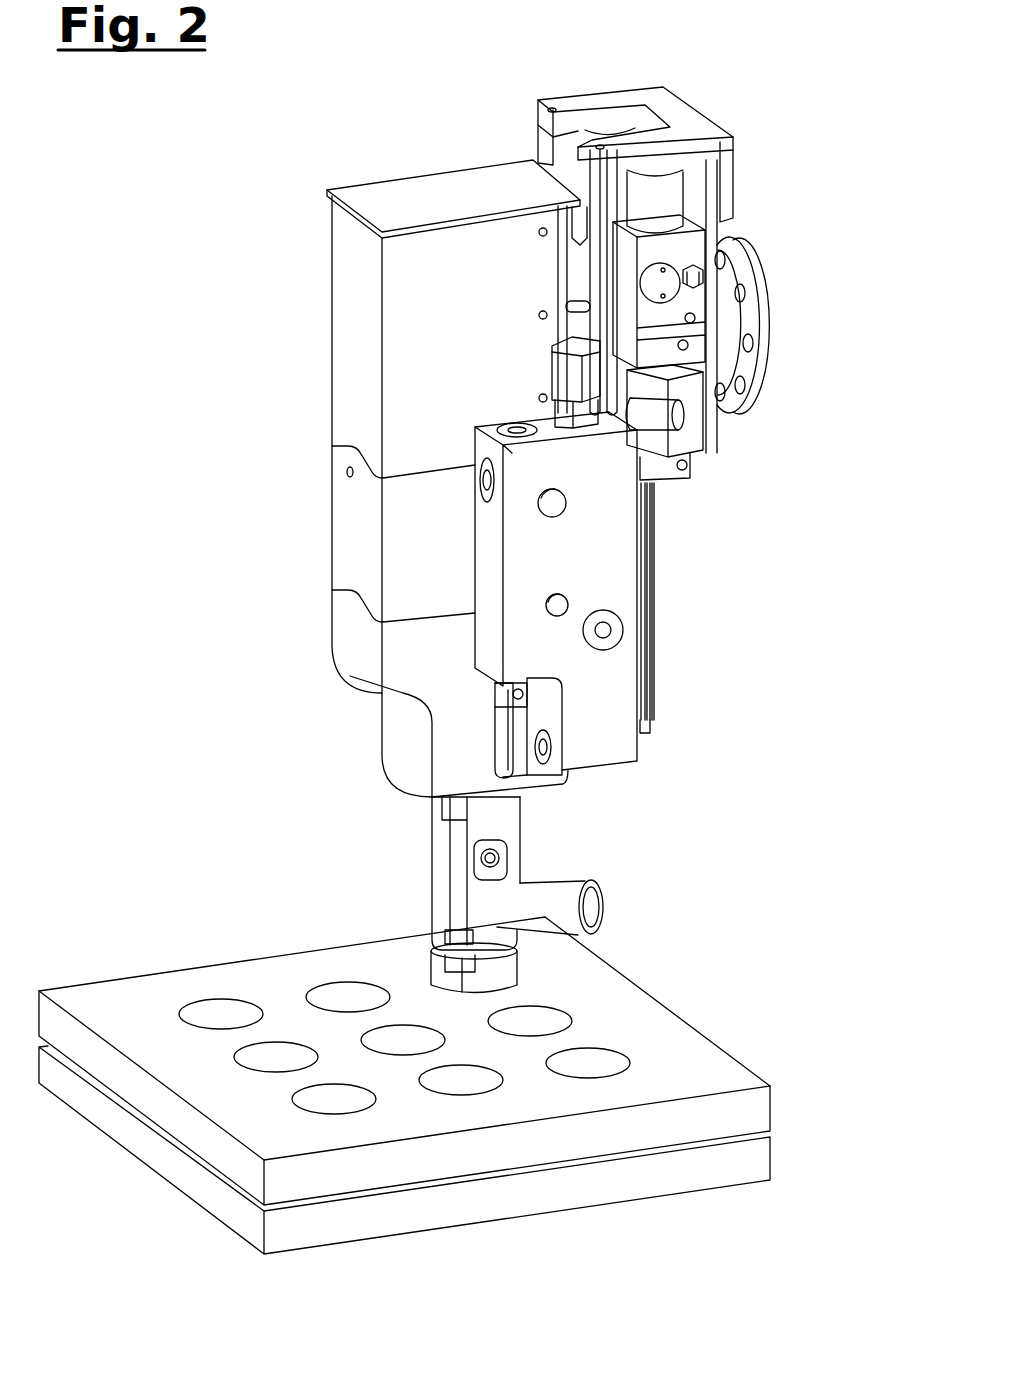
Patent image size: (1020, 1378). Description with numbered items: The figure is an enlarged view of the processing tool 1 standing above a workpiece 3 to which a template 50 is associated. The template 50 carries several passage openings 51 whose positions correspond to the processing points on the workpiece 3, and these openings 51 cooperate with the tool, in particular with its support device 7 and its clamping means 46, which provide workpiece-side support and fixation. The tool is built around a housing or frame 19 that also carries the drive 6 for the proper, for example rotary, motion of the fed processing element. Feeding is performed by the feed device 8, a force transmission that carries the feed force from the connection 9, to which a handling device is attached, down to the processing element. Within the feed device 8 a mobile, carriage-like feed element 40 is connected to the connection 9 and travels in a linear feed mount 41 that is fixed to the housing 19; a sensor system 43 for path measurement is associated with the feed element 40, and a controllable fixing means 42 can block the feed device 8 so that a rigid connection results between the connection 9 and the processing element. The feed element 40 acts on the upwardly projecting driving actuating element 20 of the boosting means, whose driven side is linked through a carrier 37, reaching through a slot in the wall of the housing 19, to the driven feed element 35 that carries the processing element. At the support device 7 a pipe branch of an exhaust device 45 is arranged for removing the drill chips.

The processing tool 1 is at (305, 360).
The workpiece 3 is at (471, 1201).
The drive 6 is at (358, 565).
The support device 7 is at (457, 871).
The feed device 8 is at (653, 737).
The connection 9 is at (757, 340).
The housing 19 is at (425, 190).
The driving actuating element 20 is at (602, 257).
The feed element 35 is at (503, 685).
The carrier 37 is at (511, 695).
The feed element 40 is at (673, 475).
The feed mount 41 is at (652, 588).
The fixing means 42 is at (682, 248).
The sensor system 43 is at (653, 663).
The exhaust device 45 is at (587, 907).
The clamping means 46 is at (428, 913).
The template 50 is at (139, 1000).
The passage openings 51 is at (467, 1082).